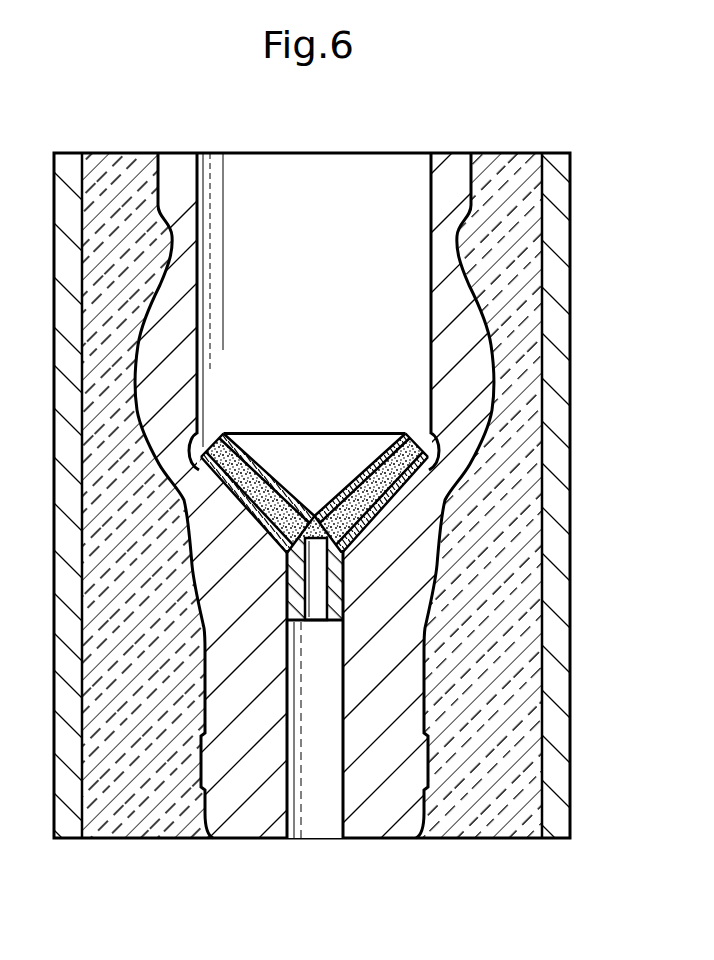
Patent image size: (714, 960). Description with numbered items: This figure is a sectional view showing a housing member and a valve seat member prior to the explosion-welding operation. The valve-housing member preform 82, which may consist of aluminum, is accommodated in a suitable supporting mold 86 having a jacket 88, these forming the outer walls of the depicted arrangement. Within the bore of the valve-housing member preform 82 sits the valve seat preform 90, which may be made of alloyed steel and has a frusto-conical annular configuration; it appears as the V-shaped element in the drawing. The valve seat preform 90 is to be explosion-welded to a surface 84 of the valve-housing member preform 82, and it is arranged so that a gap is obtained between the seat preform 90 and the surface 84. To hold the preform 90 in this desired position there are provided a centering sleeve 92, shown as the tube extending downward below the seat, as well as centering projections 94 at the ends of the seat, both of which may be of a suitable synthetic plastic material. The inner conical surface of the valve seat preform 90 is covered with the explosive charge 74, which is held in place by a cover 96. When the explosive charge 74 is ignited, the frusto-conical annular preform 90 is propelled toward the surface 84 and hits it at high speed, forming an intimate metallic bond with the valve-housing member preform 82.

The explosive charge 74 is at (366, 463).
The valve-housing member preform 82 is at (450, 343).
The surface 84 is at (390, 517).
The supporting mold 86 is at (530, 237).
The jacket 88 is at (556, 332).
The valve seat preform 90 is at (247, 500).
The centering sleeve 92 is at (327, 630).
The centering projections 94 is at (205, 440).
The cover 96 is at (265, 460).